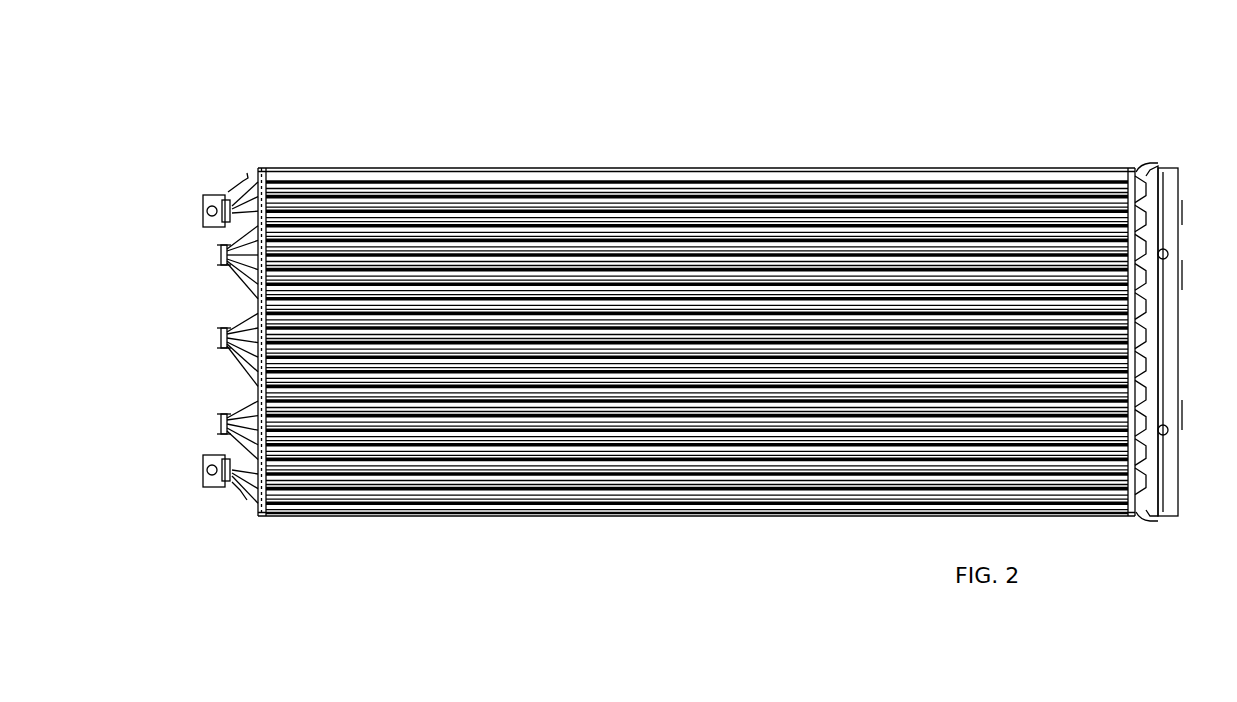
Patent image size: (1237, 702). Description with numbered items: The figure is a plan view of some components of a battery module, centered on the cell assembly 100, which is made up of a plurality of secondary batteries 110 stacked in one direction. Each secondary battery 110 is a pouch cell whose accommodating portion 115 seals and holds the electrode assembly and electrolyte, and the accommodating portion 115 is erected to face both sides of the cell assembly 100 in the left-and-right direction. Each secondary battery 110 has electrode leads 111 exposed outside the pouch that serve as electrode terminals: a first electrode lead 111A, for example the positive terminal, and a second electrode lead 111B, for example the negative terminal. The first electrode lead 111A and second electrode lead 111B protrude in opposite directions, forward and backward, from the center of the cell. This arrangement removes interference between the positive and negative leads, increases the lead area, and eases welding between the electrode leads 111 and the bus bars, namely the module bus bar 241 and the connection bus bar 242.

The cell assembly 100 is at (680, 308).
The secondary battery 110 is at (340, 205).
The accommodating portion 115 is at (532, 170).
The electrode lead 111 is at (1012, 42).
The first electrode lead 111A is at (247, 180).
The second electrode lead 111B is at (1152, 165).
The module bus bar 241 is at (202, 212).
The connection bus bar 242 is at (218, 256).